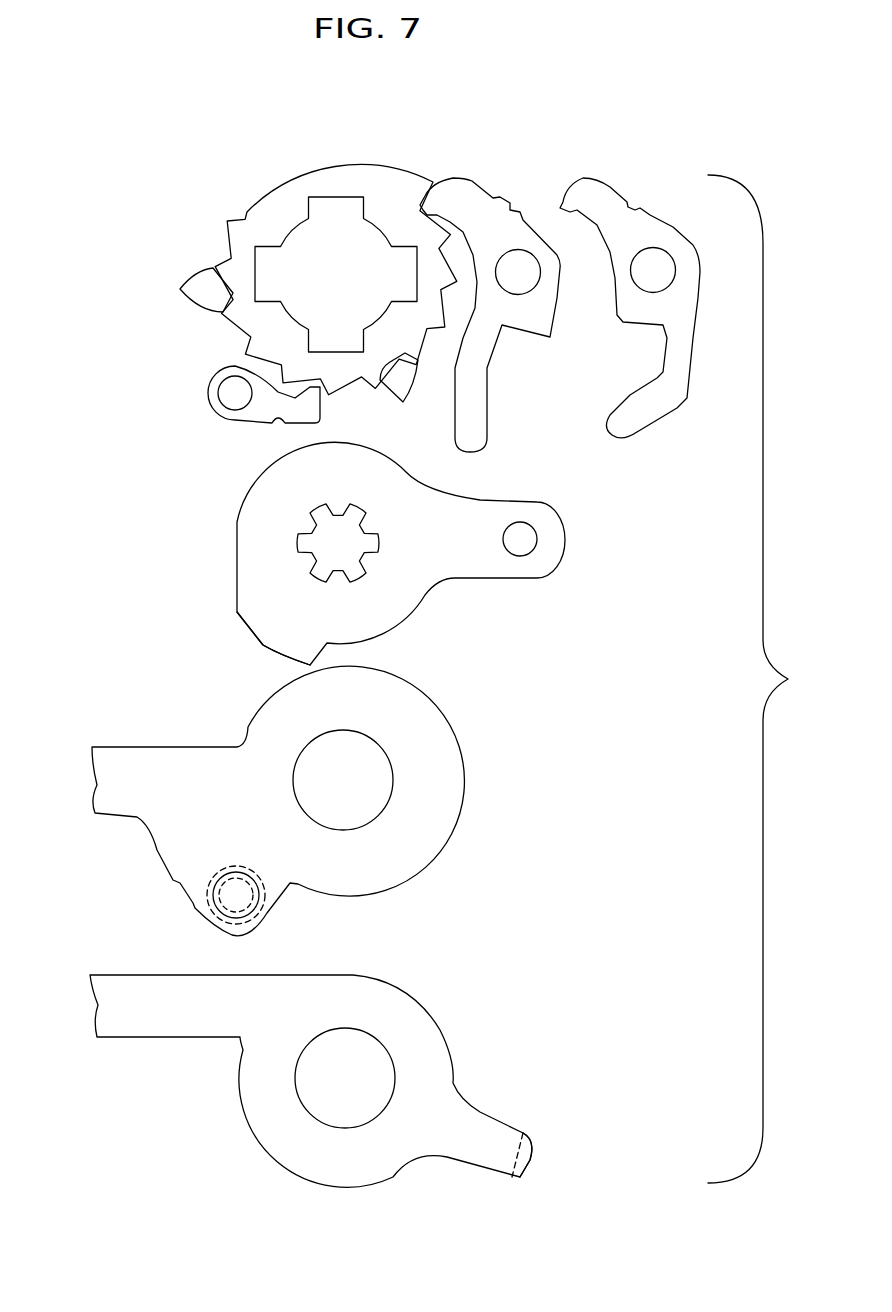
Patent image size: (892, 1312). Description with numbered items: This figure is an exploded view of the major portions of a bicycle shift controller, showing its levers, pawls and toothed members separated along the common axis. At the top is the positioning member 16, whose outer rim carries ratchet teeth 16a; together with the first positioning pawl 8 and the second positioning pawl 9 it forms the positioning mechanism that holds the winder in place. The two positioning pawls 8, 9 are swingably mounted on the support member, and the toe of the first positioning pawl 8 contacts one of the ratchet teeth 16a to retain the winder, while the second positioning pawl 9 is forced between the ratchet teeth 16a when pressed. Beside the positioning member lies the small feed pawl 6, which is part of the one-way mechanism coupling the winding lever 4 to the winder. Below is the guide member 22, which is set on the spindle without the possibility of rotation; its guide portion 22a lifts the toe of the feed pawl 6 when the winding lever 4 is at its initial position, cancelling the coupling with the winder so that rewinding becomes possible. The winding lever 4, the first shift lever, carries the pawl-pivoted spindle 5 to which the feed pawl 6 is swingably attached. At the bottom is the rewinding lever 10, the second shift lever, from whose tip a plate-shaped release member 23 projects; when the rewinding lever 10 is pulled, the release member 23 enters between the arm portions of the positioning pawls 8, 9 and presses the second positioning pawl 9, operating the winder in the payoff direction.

The positioning member 16 is at (268, 205).
The ratchet teeth 16a is at (181, 289).
The first positioning pawl 8 is at (472, 192).
The second positioning pawl 9 is at (600, 190).
The feed pawl 6 is at (242, 417).
The guide member 22 is at (402, 600).
The guide portion 22a is at (262, 645).
The winding lever 4 is at (137, 763).
The pawl-pivoted spindle 5 is at (238, 890).
The rewinding lever 10 is at (173, 1027).
The release member 23 is at (523, 1160).